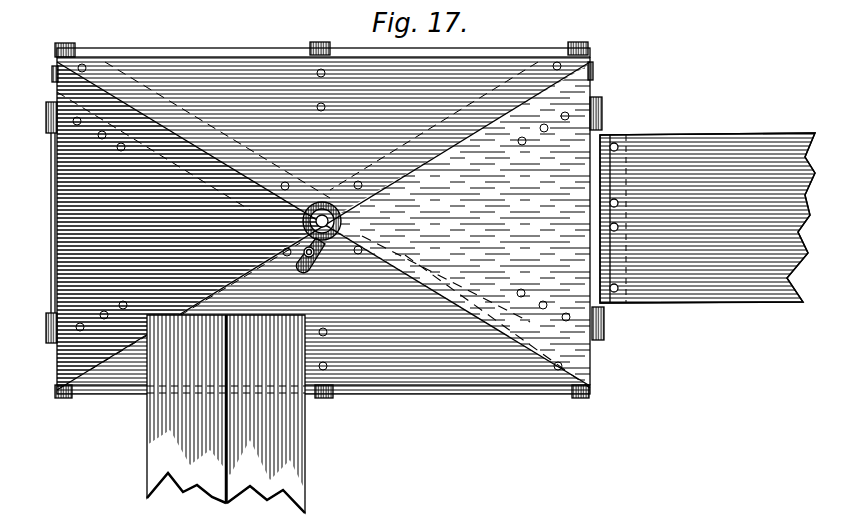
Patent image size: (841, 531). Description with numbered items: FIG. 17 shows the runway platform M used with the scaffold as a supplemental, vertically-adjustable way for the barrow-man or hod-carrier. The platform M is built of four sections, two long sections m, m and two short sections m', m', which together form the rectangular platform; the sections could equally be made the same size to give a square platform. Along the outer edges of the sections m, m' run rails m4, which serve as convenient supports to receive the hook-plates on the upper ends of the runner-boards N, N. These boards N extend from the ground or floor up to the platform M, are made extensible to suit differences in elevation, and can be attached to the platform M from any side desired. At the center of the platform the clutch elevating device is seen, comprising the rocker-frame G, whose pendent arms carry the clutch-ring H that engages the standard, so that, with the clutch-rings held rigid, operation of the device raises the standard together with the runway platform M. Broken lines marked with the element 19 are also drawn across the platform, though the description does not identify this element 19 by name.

The platform M is at (323, 221).
The long sections m is at (323, 225).
The short sections m' is at (323, 226).
The rails m4 is at (393, 408).
The runner-boards N is at (481, 323).
The rocker-frame G is at (316, 262).
The clutch-ring H is at (342, 221).
The connecting rod 19 is at (422, 256).